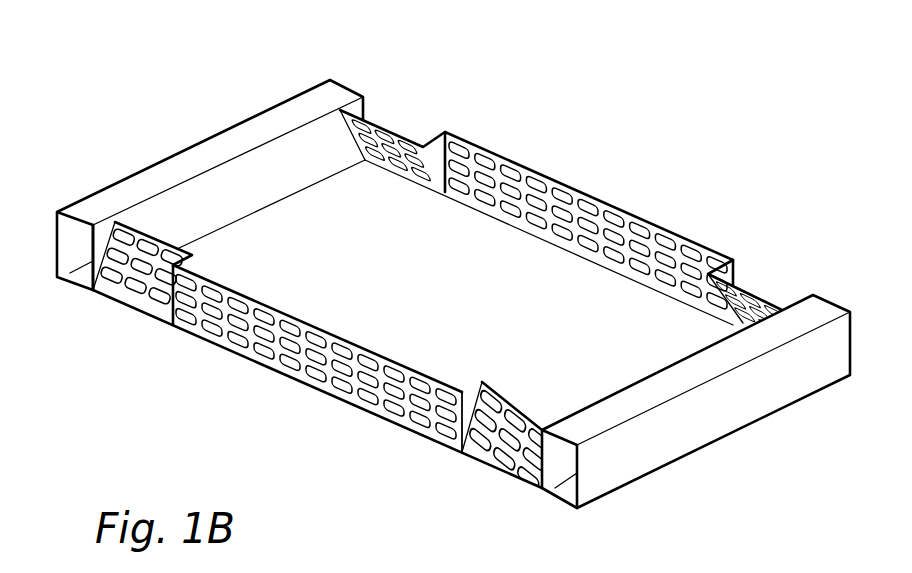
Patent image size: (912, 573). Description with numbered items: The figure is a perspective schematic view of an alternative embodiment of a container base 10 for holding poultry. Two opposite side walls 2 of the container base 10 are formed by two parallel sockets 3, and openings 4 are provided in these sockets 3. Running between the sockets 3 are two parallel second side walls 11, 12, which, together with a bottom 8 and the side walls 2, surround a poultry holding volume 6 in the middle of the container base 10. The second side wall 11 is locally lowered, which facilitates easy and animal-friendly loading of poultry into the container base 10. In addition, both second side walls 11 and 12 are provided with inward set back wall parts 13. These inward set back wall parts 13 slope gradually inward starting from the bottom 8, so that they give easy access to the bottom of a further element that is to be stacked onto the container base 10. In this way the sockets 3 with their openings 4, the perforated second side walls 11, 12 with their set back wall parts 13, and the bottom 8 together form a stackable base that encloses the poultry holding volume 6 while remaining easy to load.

The container base 10 is at (96, 96).
The side walls 2 is at (215, 127).
The sockets 3 is at (337, 96).
The openings 4 is at (85, 272).
The poultry holding volume 6 is at (455, 318).
The bottom 8 is at (623, 310).
The second side wall 11 is at (288, 382).
The second side wall 12 is at (587, 187).
The inward set back wall parts 13 is at (392, 128).